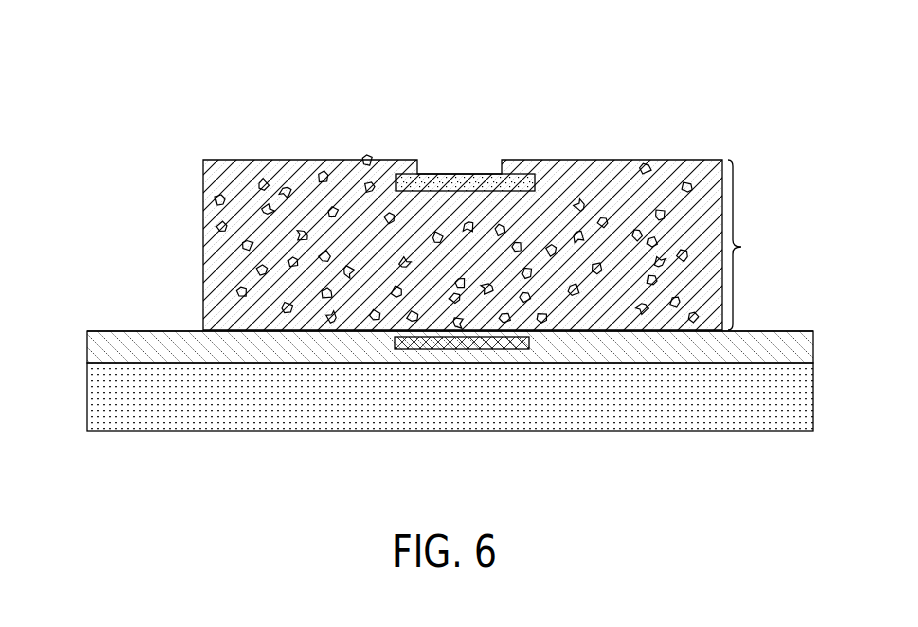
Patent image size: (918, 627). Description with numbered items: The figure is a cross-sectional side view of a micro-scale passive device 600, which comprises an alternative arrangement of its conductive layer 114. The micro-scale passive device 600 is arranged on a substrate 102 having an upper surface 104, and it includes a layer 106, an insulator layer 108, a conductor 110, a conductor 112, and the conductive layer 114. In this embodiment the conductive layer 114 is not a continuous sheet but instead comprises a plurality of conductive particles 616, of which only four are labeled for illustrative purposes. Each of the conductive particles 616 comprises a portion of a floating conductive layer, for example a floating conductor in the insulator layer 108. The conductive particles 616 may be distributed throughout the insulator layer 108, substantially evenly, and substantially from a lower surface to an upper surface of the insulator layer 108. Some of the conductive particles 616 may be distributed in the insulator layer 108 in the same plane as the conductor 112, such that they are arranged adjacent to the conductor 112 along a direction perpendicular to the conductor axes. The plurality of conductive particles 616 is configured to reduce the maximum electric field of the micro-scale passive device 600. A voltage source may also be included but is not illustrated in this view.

The micro-scale passive device 600 is at (186, 117).
The substrate 102 is at (98, 393).
The upper surface 104 is at (142, 354).
The layer 106 is at (795, 348).
The insulator layer 108 is at (615, 173).
The conductor 110 is at (470, 349).
The conductor 112 is at (475, 182).
The conductive layer 114 is at (749, 245).
The conductive particles 616 is at (580, 203).